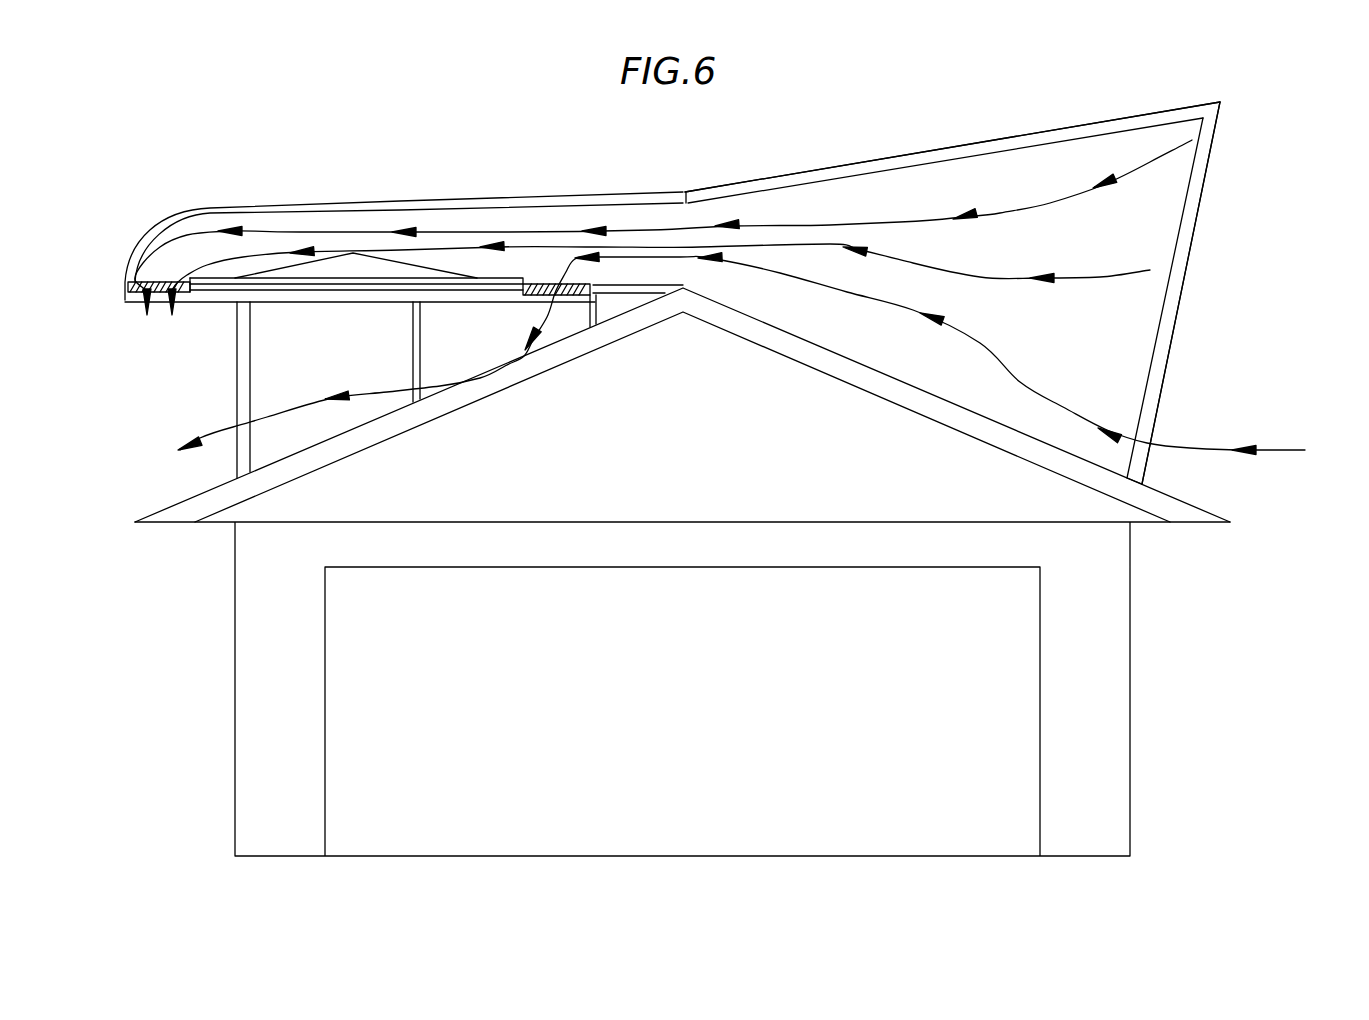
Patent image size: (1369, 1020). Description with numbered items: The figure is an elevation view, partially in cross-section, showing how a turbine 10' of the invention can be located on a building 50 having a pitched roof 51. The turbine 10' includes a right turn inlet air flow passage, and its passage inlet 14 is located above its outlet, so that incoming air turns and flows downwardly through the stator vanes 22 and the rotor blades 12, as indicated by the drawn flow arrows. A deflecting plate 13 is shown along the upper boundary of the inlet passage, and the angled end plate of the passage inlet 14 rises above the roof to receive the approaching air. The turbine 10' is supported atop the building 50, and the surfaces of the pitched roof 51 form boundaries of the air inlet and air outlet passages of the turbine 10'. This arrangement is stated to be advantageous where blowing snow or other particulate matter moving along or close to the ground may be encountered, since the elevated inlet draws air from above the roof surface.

The turbine 10' is at (952, 269).
The top deflector plate 13 is at (1002, 176).
The passage inlet 14 is at (1197, 223).
The rotor blades 12 is at (388, 365).
The stator vanes 22 is at (183, 292).
The building 50 is at (1092, 699).
The pitched roof 51 is at (980, 417).